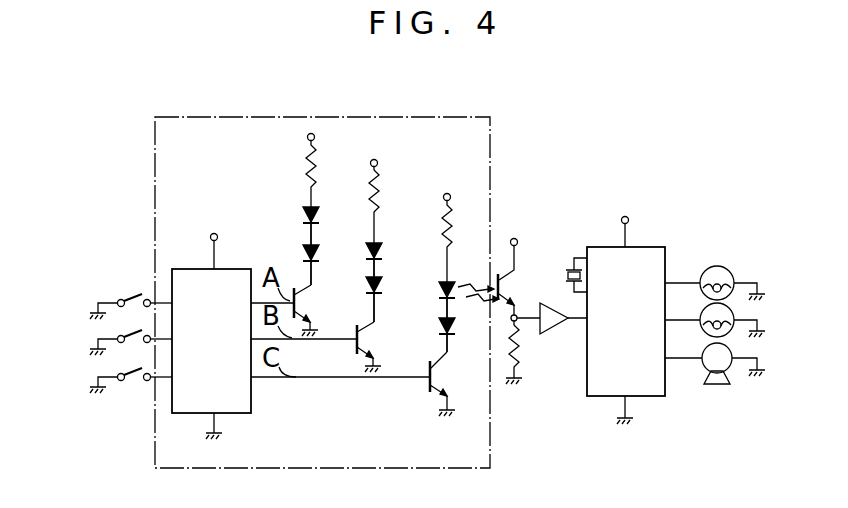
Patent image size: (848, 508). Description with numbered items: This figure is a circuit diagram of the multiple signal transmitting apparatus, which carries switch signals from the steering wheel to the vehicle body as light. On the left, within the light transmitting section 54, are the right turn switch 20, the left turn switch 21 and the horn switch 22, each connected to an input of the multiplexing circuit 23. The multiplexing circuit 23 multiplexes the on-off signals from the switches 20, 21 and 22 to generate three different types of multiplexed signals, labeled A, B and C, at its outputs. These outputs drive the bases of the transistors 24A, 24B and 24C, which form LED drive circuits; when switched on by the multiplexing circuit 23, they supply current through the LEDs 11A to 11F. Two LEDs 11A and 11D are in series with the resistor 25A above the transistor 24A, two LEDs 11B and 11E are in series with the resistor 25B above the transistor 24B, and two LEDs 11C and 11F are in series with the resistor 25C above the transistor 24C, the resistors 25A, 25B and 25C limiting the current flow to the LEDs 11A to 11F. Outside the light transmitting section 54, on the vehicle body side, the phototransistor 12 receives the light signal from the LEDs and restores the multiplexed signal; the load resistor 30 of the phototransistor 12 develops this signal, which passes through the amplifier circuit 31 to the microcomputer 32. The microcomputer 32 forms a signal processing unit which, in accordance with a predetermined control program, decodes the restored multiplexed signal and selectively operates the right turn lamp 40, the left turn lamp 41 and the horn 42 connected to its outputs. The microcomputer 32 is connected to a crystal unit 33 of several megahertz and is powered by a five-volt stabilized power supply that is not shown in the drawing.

The light transmitting section 54 is at (394, 117).
The right turn switch 20 is at (138, 296).
The left turn switch 21 is at (124, 331).
The horn switch 22 is at (124, 366).
The multiplexing circuit 23 is at (251, 413).
The transistor 24A is at (300, 304).
The transistor 24B is at (364, 340).
The transistor 24C is at (431, 379).
The resistor 25A is at (306, 168).
The resistor 25B is at (378, 178).
The resistor 25C is at (444, 229).
The LED 11A is at (318, 210).
The LED 11B is at (382, 250).
The LED 11C is at (451, 284).
The LED 11D is at (318, 250).
The LED 11E is at (380, 284).
The LED 11F is at (450, 333).
The phototransistor 12 is at (508, 278).
The load resistor 30 is at (519, 345).
The amplifier circuit 31 is at (553, 332).
The microcomputer 32 is at (640, 247).
The crystal unit 33 is at (567, 266).
The right turn lamp 40 is at (720, 267).
The left turn lamp 41 is at (706, 310).
The horn 42 is at (728, 373).